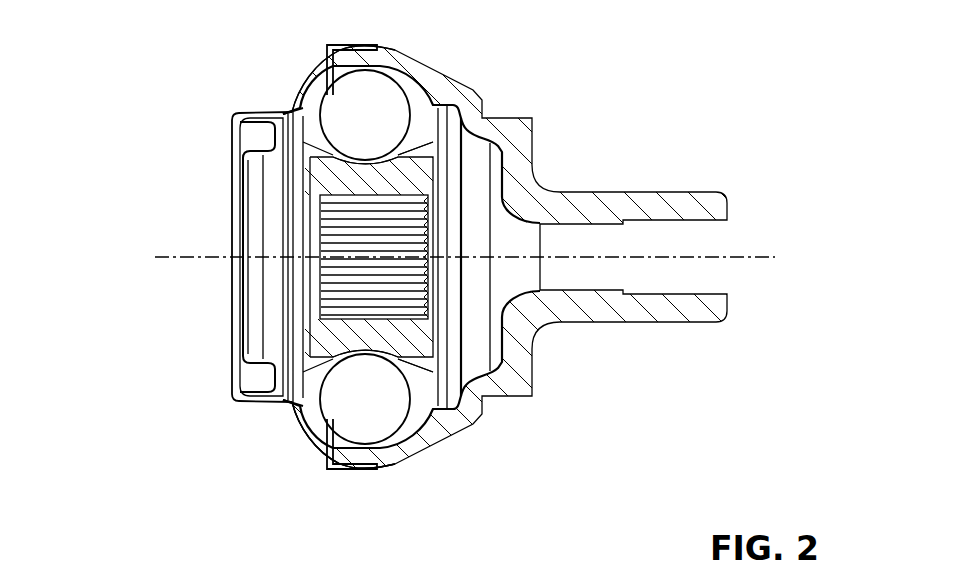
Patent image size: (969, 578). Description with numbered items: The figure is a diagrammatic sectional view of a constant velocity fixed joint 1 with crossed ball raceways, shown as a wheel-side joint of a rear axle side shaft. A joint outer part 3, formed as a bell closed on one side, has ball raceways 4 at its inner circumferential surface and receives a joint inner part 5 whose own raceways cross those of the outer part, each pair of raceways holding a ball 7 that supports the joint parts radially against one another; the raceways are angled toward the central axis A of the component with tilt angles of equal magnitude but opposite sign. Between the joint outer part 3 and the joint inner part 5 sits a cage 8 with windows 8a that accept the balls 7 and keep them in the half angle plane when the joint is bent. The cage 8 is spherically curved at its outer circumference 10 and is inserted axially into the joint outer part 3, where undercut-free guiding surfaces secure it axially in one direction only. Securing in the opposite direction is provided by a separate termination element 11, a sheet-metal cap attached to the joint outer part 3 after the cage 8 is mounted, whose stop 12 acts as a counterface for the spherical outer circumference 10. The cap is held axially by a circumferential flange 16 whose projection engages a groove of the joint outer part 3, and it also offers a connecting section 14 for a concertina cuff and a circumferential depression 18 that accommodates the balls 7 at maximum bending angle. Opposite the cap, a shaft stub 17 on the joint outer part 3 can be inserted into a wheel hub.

The constant velocity fixed joint 1 is at (172, 67).
The joint outer part 3 is at (448, 92).
The ball raceways 4 is at (387, 68).
The joint inner part 5 is at (320, 180).
The ball 7 is at (352, 103).
The cage 8 is at (303, 117).
The windows 8a is at (405, 398).
The outer circumference of the cage 10 is at (310, 403).
The termination element 11 is at (313, 437).
The stop 12 is at (288, 399).
The connecting section 14 is at (250, 362).
The circumferential flange 16 is at (368, 467).
The shaft stub 17 is at (676, 206).
The circumferential depression 18 is at (305, 90).
The central axis A is at (193, 254).